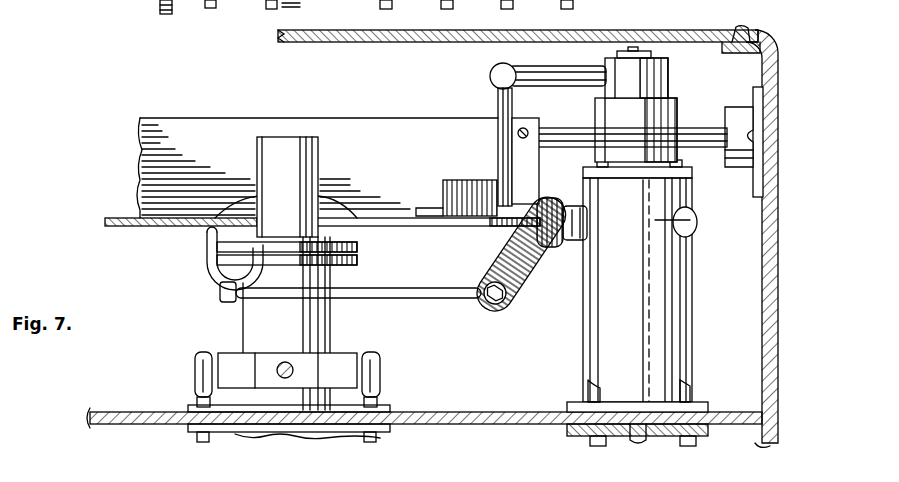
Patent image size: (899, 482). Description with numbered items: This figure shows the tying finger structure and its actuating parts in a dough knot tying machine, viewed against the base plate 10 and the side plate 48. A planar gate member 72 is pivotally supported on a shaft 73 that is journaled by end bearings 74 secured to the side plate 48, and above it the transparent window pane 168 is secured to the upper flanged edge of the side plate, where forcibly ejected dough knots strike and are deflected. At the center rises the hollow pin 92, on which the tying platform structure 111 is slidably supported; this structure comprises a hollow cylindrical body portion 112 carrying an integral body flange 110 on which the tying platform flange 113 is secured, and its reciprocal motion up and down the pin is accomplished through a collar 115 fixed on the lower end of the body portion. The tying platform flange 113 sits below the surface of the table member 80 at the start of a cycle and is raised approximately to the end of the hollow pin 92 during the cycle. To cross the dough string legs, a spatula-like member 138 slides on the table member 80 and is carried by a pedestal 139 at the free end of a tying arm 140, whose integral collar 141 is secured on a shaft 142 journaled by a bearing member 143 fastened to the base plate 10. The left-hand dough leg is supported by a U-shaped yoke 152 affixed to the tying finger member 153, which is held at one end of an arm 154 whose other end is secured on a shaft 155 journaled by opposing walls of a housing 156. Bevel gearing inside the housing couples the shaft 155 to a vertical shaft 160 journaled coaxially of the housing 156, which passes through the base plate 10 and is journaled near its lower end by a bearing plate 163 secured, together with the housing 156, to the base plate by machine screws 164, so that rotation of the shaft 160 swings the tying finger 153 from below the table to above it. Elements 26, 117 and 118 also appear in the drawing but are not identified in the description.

The base plate 10 is at (487, 414).
The bolt 26 is at (366, 7).
The side plate 48 is at (776, 236).
The planar gate member 72 is at (140, 152).
The shaft 73 is at (573, 130).
The end bearings 74 is at (735, 118).
The table member 80 is at (112, 216).
The hollow pin 92 is at (302, 153).
The integral body flange 110 is at (358, 262).
The tying platform structure 111 is at (230, 322).
The hollow cylindrical body portion 112 is at (312, 324).
The tying platform flange 113 is at (358, 246).
The collar 115 is at (352, 362).
The mounting nut 117 is at (198, 383).
The mounting bolt 118 is at (196, 434).
The spatula-like member 138 is at (469, 180).
The pedestal 139 is at (497, 104).
The tying arm 140 is at (522, 68).
The integral collar 141 is at (652, 72).
The shaft 142 is at (642, 52).
The bearing member 143 is at (665, 122).
The U-shaped yoke 152 is at (214, 252).
The tying finger member 153 is at (394, 300).
The arm 154 is at (518, 272).
The shaft 155 is at (574, 244).
The housing 156 is at (690, 220).
The shaft 160 is at (634, 430).
The bearing plate 163 is at (568, 432).
The machine screws 164 is at (592, 392).
The transparent window pane 168 is at (690, 32).